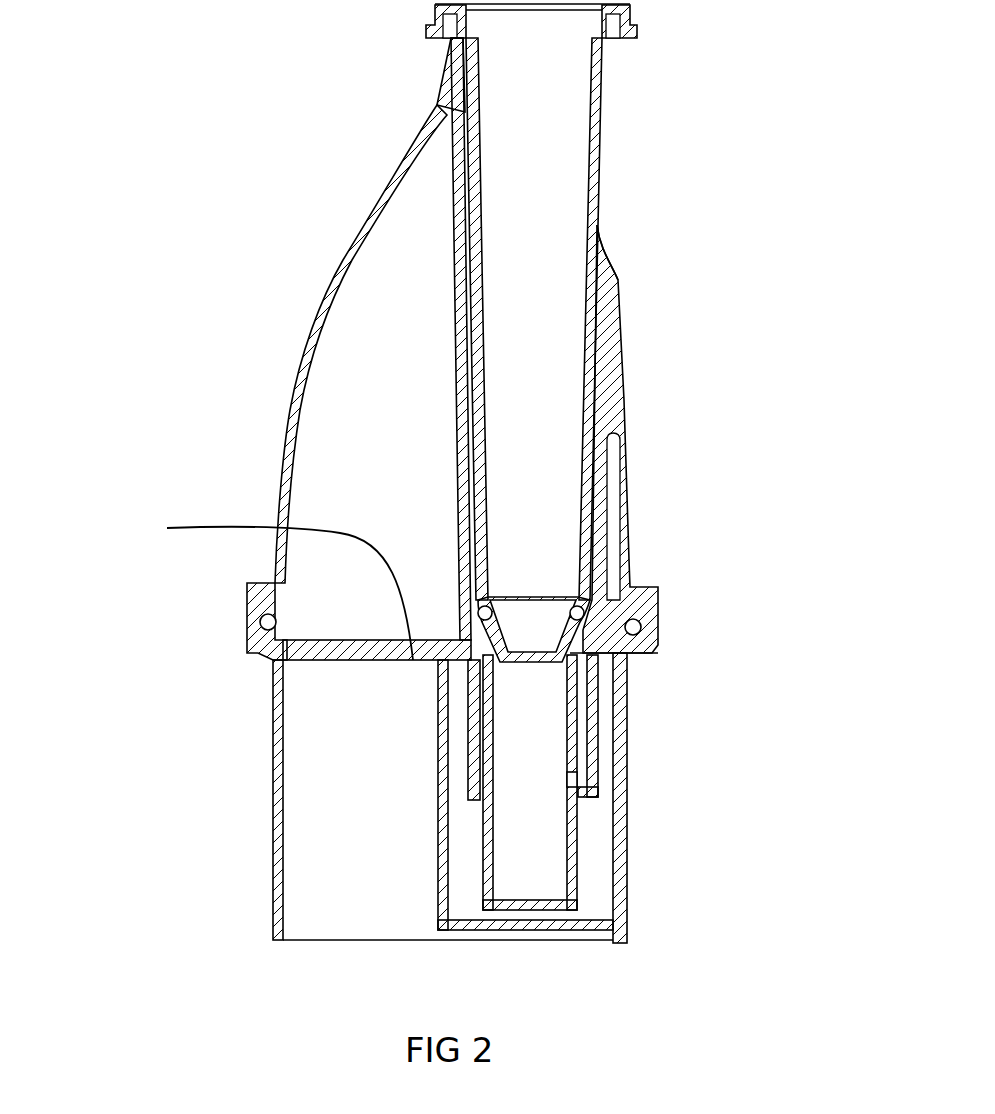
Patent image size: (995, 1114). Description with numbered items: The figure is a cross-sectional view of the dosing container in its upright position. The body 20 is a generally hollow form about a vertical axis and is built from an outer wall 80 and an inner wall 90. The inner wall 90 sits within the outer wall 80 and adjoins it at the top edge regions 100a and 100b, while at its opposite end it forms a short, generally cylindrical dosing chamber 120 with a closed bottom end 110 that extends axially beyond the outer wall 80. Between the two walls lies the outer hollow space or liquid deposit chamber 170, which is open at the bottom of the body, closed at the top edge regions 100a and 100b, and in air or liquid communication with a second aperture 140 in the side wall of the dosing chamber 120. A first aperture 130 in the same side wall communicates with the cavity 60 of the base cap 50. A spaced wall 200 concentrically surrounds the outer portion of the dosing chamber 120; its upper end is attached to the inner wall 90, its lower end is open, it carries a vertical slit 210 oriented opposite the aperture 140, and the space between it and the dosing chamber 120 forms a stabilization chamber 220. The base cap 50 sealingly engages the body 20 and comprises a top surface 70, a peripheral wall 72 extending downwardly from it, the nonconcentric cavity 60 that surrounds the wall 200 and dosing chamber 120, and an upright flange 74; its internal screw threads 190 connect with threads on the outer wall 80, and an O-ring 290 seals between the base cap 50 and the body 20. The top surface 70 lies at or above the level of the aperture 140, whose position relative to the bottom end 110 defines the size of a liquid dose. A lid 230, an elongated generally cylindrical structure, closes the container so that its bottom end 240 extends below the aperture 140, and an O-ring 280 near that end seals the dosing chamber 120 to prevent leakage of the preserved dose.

The lid 230 is at (588, 100).
The top edge region 100a is at (448, 115).
The top edge region 100b is at (600, 280).
The body 20 is at (615, 373).
The liquid deposit chamber 170 is at (380, 298).
The outer wall 80 is at (300, 355).
The inner wall 90 is at (466, 460).
The top surface 70 is at (268, 587).
The internal screw threads 190 is at (247, 592).
The upright flange 74 is at (262, 607).
The bottom end of lid 240 is at (562, 600).
The O-ring 280 is at (584, 610).
The O-ring 290 is at (641, 627).
The second aperture 140 is at (580, 655).
The slit 210 is at (470, 717).
The dosing chamber 120 is at (535, 722).
The stabilization chamber 220 is at (478, 777).
The spaced wall 200 is at (598, 775).
The first aperture 130 is at (572, 782).
The cavity 60 is at (594, 853).
The base cap 50 is at (614, 880).
The peripheral wall 72 is at (270, 870).
The closed bottom end 110 is at (545, 908).